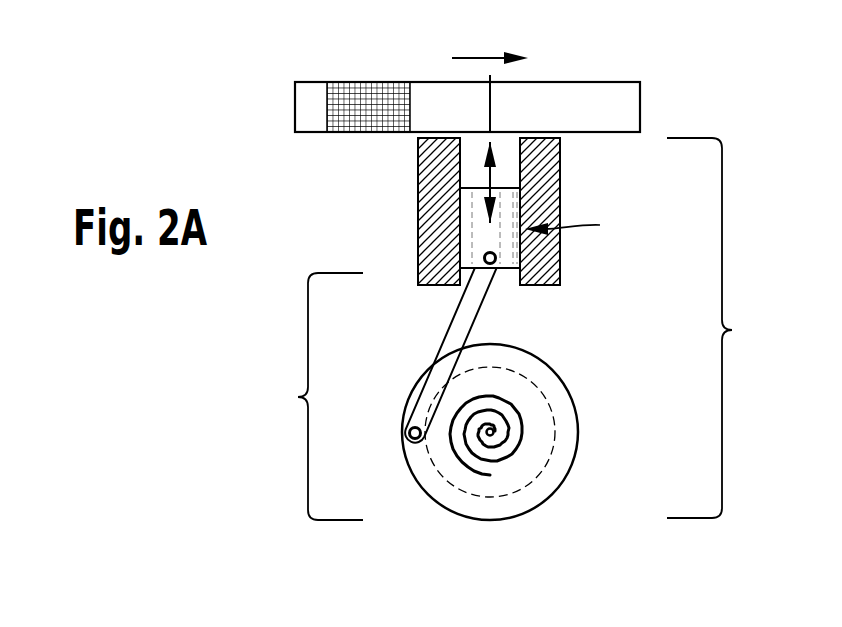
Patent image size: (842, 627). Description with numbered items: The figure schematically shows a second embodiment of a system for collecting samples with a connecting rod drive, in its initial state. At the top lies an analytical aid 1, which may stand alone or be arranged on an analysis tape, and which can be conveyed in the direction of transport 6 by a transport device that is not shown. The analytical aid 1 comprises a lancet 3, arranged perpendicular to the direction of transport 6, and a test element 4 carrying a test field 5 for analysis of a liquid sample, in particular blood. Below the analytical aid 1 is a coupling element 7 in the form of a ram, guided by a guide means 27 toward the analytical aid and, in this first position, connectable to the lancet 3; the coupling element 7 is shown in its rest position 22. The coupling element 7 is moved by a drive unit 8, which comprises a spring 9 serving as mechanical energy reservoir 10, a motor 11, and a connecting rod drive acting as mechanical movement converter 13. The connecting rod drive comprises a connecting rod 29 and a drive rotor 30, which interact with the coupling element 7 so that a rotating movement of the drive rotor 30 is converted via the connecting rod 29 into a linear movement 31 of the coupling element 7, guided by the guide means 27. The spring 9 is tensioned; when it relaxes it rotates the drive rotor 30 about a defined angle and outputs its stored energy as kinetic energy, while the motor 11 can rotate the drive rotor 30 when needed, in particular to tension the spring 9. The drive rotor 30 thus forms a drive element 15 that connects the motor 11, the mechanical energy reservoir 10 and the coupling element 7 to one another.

The analytical aid 1 is at (573, 100).
The lancet 3 is at (490, 103).
The test element 4 is at (312, 110).
The test field 5 is at (362, 97).
The direction of transport 6 is at (479, 56).
The coupling element 7 is at (487, 237).
The drive unit 8 is at (715, 328).
The spring 9 is at (507, 403).
The mechanical energy reservoir 10 is at (490, 432).
The motor 11 is at (573, 423).
The mechanical movement converter 13 is at (290, 396).
The drive element 15 is at (558, 460).
The rest position 22 is at (577, 225).
The guide means 27 is at (438, 201).
The connecting rod 29 is at (460, 327).
The drive rotor 30 is at (490, 432).
The linear movement 31 is at (488, 178).